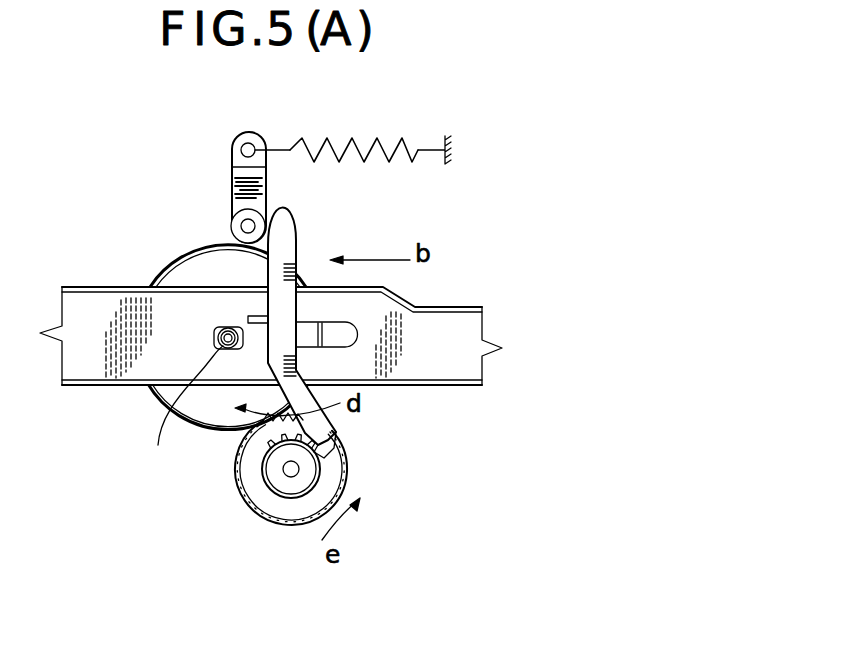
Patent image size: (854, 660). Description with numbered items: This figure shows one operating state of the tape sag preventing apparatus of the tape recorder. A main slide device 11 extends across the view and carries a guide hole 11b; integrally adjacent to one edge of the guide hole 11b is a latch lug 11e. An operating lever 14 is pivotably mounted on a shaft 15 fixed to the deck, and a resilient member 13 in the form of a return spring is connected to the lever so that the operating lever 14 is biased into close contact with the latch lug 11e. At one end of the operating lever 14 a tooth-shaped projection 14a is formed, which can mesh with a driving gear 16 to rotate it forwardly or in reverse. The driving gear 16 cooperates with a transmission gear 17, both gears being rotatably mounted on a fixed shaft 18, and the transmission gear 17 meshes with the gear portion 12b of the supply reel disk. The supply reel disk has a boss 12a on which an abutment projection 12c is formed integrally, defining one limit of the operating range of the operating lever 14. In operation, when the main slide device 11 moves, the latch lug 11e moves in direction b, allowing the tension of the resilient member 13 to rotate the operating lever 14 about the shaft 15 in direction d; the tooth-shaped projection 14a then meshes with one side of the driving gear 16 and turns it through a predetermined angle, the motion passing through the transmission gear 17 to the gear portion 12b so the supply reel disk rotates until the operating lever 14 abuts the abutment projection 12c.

The main slide device 11 is at (437, 396).
The guide hole 11b is at (183, 413).
The latch lug 11e is at (253, 314).
The boss 12a is at (238, 350).
The gear portion 12b is at (153, 396).
The abutment projection 12c is at (213, 330).
The resilient member 13 is at (385, 140).
The operating lever 14 is at (297, 240).
The tooth-shaped projection 14a is at (330, 452).
The shaft 15 is at (238, 212).
The driving gear 16 is at (287, 485).
The transmission gear 17 is at (302, 510).
The fixed shaft 18 is at (287, 470).